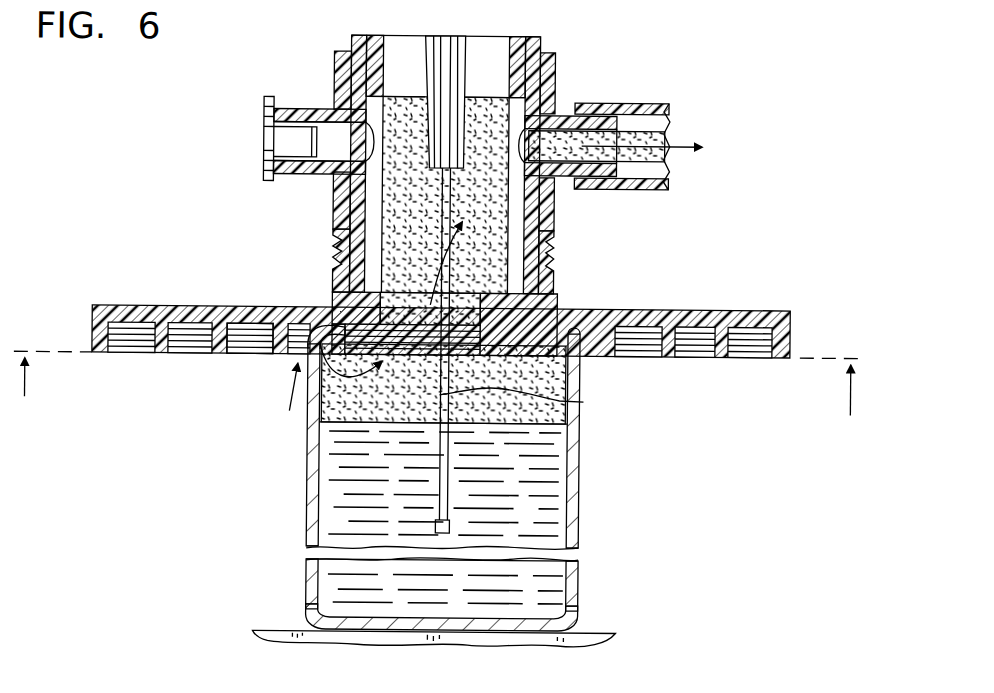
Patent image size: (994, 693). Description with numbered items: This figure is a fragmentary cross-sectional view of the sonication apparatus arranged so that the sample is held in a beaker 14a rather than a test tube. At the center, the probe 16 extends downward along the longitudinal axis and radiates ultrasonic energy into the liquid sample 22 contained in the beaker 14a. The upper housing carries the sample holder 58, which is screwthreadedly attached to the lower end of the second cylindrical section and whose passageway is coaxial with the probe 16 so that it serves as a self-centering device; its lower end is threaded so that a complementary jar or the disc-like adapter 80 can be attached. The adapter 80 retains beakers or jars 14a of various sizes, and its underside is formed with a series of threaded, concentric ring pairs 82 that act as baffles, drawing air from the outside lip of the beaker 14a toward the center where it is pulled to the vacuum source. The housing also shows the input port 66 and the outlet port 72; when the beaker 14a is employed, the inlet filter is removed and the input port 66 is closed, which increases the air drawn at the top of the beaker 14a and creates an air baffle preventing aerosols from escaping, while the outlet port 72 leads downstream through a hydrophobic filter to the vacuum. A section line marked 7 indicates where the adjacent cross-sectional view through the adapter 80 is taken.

The sample holder 58 is at (546, 290).
The input port 66 is at (330, 136).
The outlet port 72 is at (576, 140).
The adapter 80 is at (665, 310).
The threaded concentric ring pairs 82 is at (253, 356).
The probe 16 is at (583, 401).
The beaker 14a is at (579, 477).
The liquid sample 22 is at (580, 586).
The section line 7- 7 is at (437, 370).